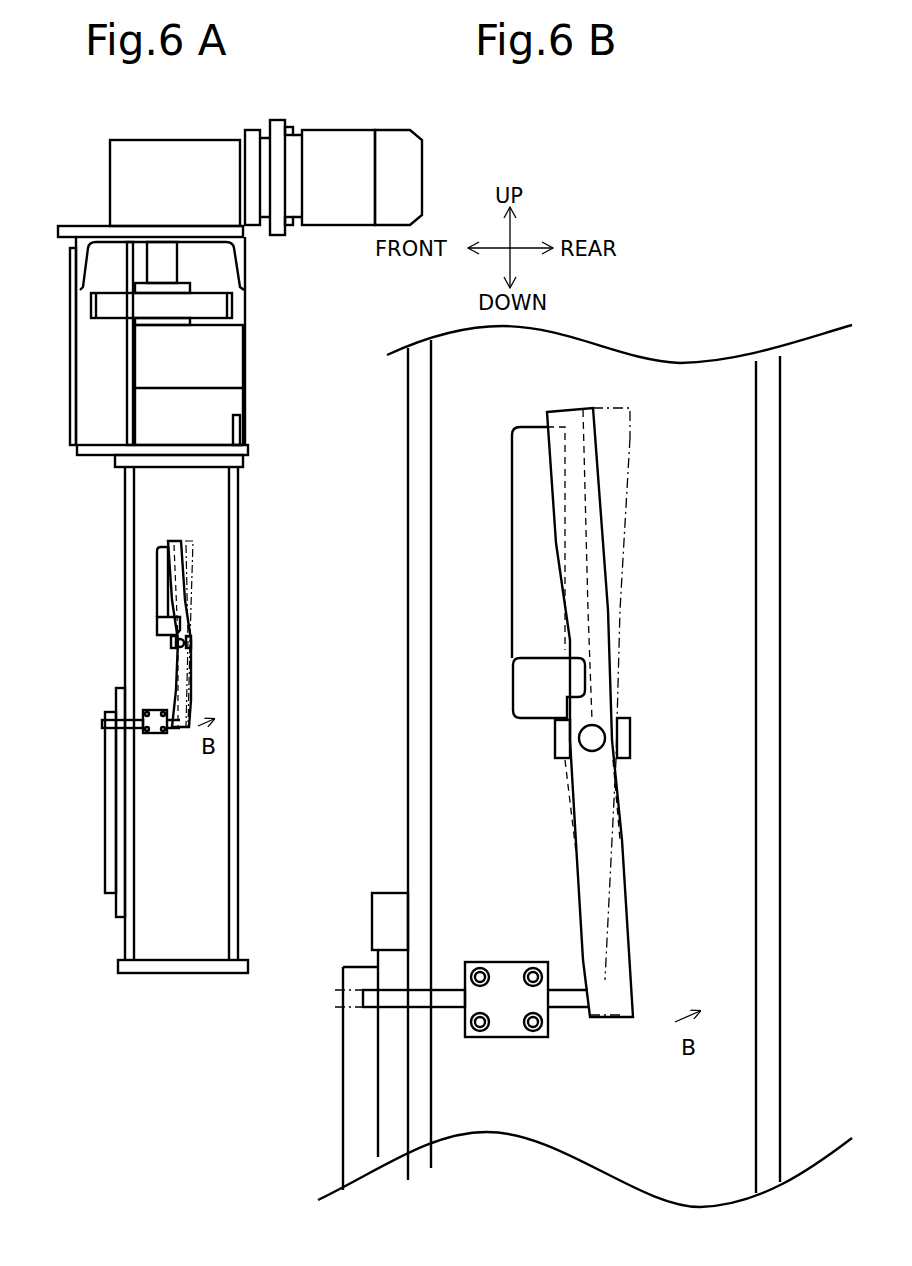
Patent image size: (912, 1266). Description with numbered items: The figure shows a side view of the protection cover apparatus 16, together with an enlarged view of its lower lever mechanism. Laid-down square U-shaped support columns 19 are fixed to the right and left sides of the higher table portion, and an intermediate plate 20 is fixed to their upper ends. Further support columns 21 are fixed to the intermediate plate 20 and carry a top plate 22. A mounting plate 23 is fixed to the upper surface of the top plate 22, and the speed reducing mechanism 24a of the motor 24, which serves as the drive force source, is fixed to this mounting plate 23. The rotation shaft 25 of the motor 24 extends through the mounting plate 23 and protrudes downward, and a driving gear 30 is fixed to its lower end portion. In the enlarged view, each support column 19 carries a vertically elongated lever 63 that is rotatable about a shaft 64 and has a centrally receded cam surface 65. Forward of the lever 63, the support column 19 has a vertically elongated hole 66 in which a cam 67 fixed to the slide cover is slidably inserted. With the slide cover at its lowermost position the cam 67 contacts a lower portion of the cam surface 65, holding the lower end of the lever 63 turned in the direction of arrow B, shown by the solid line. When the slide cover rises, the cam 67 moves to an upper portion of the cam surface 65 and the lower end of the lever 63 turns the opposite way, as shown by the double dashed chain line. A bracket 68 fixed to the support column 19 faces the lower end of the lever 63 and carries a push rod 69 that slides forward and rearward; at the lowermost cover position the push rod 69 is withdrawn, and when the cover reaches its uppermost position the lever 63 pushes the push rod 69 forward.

In FIG. 6A, the protection cover apparatus 16 is at (72, 449).
In FIG. 6A, the support column 19 is at (239, 715).
In FIG. 6B, the support column 19 is at (408, 770).
In FIG. 6A, the intermediate plate 20 is at (217, 443).
In FIG. 6A, the support column 21 is at (72, 400).
In FIG. 6A, the top plate 22 is at (247, 268).
In FIG. 6A, the mounting plate 23 is at (62, 227).
In FIG. 6A, the motor 24 is at (336, 130).
In FIG. 6A, the speed reducing mechanism 24a is at (176, 140).
In FIG. 6A, the rotation shaft 25 is at (178, 264).
In FIG. 6A, the driving gear 30 is at (233, 305).
In FIG. 6A, the lever 63 is at (196, 556).
In FIG. 6B, the lever 63 is at (631, 440).
In FIG. 6A, the shaft 64 is at (186, 648).
In FIG. 6B, the shaft 64 is at (606, 740).
In FIG. 6A, the cam surface 65 is at (172, 590).
In FIG. 6B, the cam surface 65 is at (557, 548).
In FIG. 6A, the elongated hole 66 is at (157, 558).
In FIG. 6B, the elongated hole 66 is at (512, 461).
In FIG. 6A, the cam 67 is at (158, 626).
In FIG. 6B, the cam 67 is at (517, 685).
In FIG. 6A, the bracket 68 is at (157, 734).
In FIG. 6B, the bracket 68 is at (500, 962).
In FIG. 6A, the push rod 69 is at (112, 720).
In FIG. 6B, the push rod 69 is at (395, 1010).